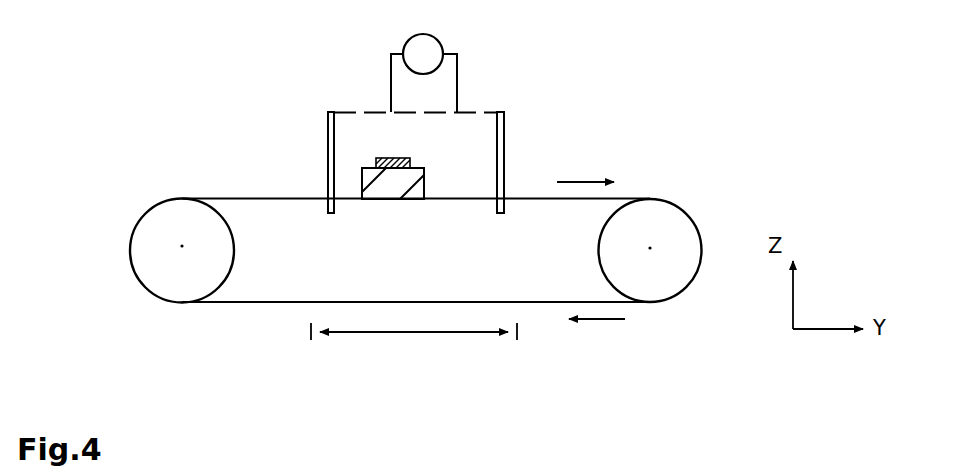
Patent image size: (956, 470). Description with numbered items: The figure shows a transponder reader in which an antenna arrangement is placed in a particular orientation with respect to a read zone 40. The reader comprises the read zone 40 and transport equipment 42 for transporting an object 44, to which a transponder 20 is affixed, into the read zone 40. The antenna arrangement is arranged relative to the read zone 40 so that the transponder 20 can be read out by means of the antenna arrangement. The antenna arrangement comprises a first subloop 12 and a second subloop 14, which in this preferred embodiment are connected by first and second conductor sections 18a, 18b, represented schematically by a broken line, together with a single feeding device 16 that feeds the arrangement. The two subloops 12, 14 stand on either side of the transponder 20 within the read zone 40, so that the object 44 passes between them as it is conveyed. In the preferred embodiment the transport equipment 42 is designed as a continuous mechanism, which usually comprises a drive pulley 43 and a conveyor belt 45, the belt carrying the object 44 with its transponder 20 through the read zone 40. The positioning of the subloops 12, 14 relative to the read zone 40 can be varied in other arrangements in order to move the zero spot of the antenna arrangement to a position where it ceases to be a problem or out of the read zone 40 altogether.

The first subloop 12 is at (327, 143).
The second subloop 14 is at (503, 137).
The single feeding device 16 is at (478, 72).
The first conductor section 18a is at (376, 68).
The second conductor section 18b is at (363, 112).
The transponder 20 is at (398, 158).
The read zone 40 is at (413, 332).
The transport equipment 42 is at (203, 194).
The drive pulley 43 is at (148, 272).
The object 44 is at (678, 227).
The conveyor belt 45 is at (240, 302).